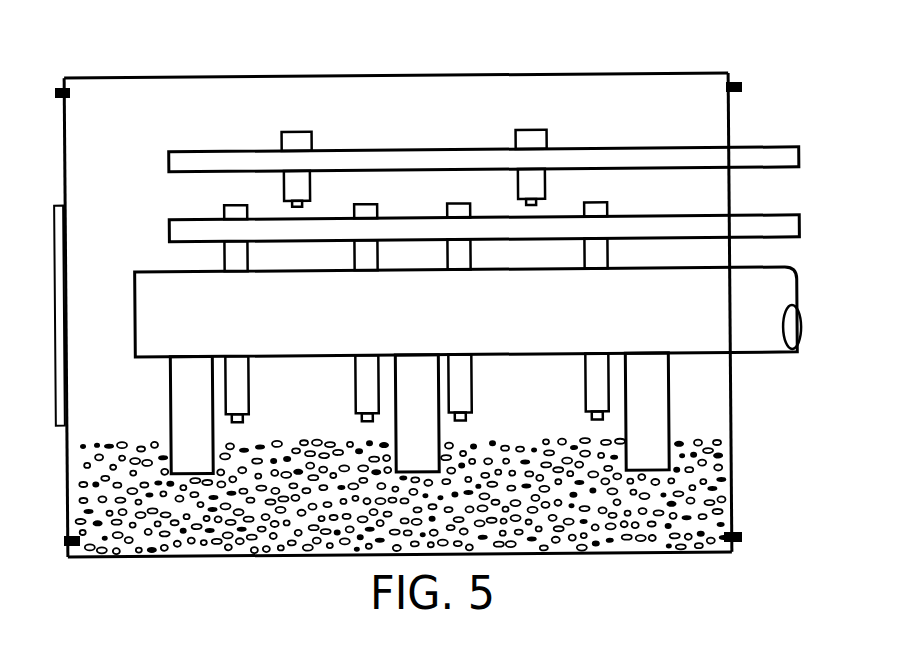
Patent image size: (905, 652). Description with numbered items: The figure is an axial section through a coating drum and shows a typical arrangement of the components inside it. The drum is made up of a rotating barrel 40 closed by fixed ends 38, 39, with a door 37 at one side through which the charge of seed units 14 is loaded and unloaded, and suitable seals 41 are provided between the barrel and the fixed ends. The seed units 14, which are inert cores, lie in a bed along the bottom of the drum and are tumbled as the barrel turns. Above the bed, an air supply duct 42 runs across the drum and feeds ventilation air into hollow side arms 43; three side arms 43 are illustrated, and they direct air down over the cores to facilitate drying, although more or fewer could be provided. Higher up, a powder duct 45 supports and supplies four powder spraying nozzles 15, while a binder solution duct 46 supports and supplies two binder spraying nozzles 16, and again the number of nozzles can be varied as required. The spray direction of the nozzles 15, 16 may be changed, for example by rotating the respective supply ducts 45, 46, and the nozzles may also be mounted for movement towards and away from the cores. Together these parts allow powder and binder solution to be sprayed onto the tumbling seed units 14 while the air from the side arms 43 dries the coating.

The seed units 14 is at (236, 568).
The powder spraying nozzles 15 is at (225, 212).
The binder spraying nozzles 16 is at (313, 145).
The door 37 is at (57, 332).
The fixed end 38 is at (65, 172).
The fixed end 39 is at (730, 128).
The rotating barrel 40 is at (528, 40).
The seals 41 is at (62, 96).
The air supply duct 42 is at (797, 290).
The hollow side arms 43 is at (658, 413).
The powder duct 45 is at (772, 222).
The binder solution duct 46 is at (786, 152).